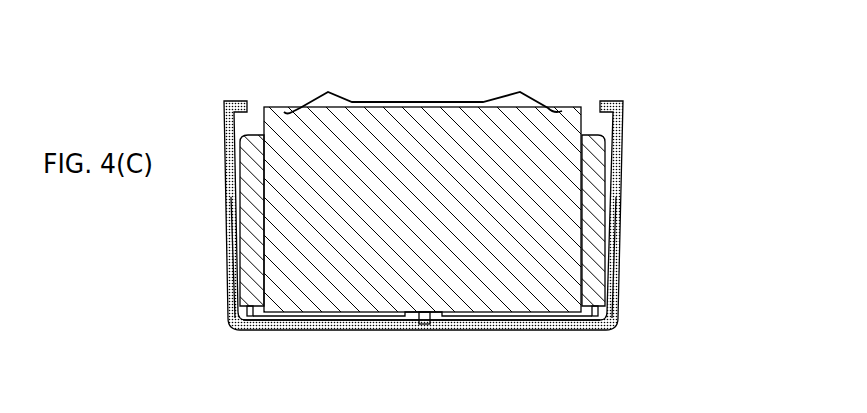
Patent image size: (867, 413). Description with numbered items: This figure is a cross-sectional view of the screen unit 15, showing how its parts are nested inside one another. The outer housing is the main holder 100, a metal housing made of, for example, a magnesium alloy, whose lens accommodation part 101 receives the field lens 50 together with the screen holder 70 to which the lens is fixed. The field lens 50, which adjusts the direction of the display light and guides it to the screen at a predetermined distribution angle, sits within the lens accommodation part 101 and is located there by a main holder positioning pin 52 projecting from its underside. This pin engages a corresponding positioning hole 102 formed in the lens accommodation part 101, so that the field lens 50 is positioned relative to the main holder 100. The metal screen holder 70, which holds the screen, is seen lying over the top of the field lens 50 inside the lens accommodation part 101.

The screen unit 15 is at (614, 77).
The field lens 50 is at (618, 231).
The main holder positioning pin 52 is at (424, 324).
The screen holder 70 is at (536, 98).
The main holder 100 is at (632, 151).
The lens accommodation part 101 is at (256, 112).
The positioning hole 102 is at (432, 319).